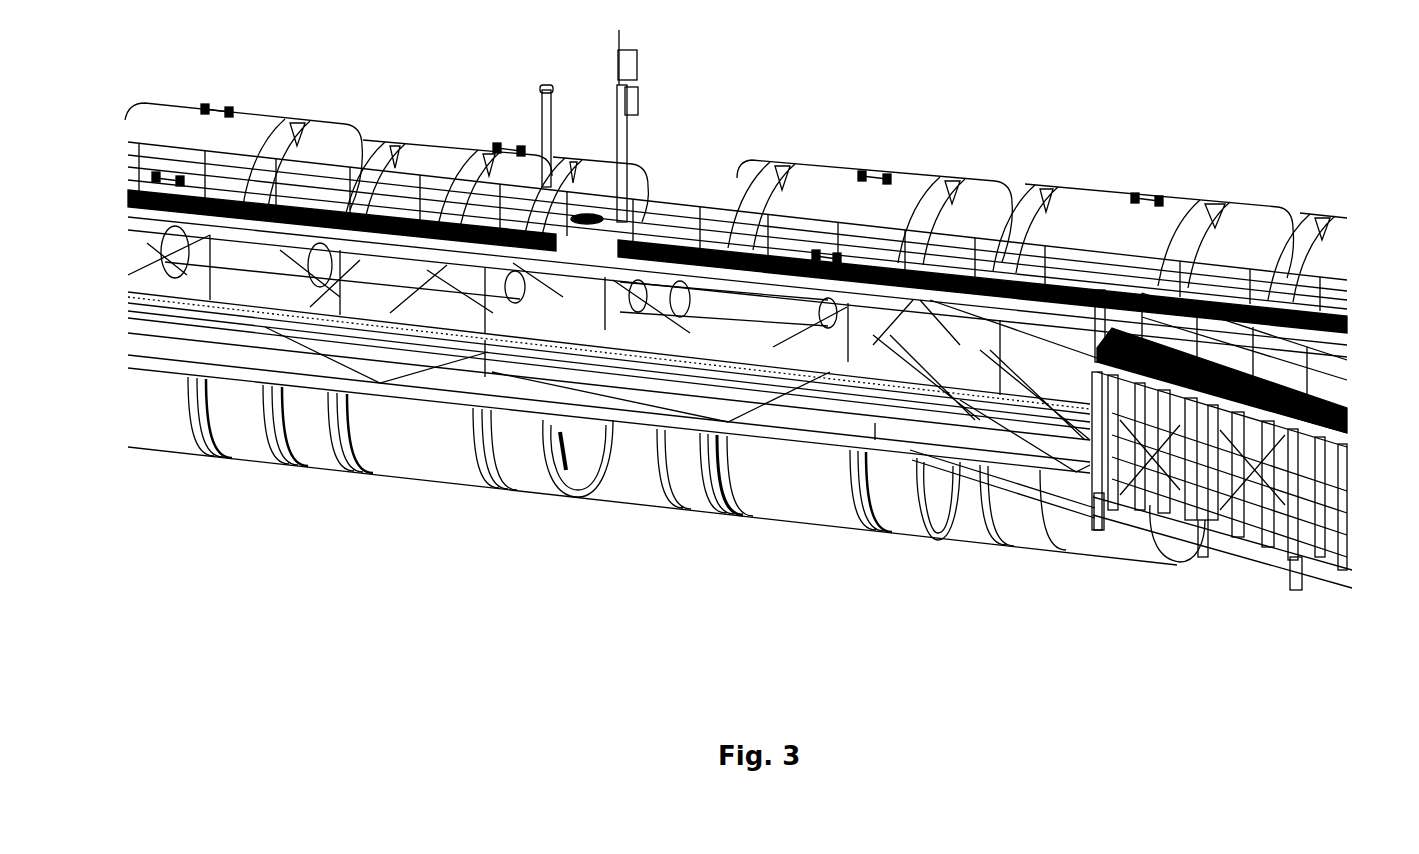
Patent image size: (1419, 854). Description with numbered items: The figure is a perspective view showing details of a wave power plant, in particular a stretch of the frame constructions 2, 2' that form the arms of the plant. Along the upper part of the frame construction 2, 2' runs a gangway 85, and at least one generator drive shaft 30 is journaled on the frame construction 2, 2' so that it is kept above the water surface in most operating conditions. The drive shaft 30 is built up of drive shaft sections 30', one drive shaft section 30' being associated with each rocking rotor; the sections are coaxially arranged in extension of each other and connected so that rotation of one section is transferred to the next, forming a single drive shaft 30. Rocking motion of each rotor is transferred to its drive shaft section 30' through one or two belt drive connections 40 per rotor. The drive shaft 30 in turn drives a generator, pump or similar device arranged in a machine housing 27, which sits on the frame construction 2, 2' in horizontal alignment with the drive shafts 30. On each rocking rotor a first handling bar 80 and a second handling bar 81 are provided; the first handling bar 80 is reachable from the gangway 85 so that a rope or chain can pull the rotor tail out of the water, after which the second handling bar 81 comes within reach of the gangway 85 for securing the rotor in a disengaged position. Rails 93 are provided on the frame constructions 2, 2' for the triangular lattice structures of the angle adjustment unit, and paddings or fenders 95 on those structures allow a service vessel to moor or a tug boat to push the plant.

The frame construction 2 is at (652, 471).
The frame construction 2' is at (798, 467).
The machine housing 27 is at (567, 312).
The generator drive shaft 30 is at (728, 213).
The drive shaft section 30' is at (343, 192).
The belt drive connection 40 is at (458, 202).
The first handling bar 80 is at (170, 172).
The second handling bar 81 is at (228, 98).
The gangway 85 is at (262, 162).
The rail 93 is at (1347, 350).
The fender 95 is at (1343, 560).